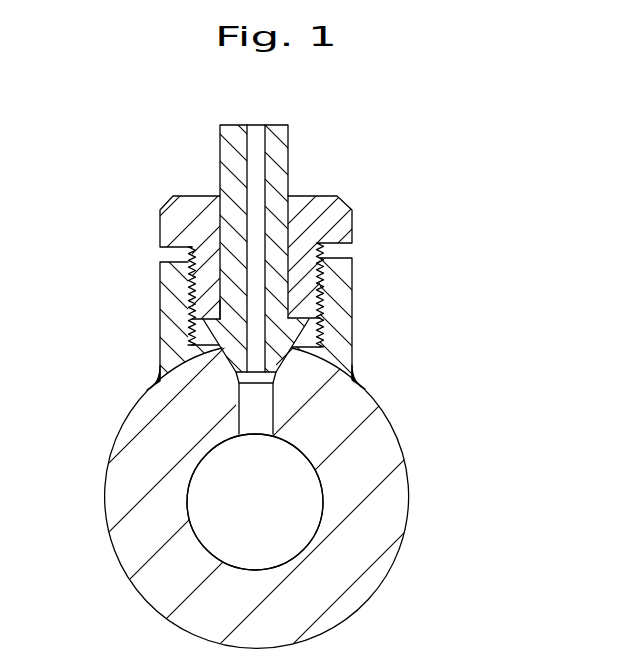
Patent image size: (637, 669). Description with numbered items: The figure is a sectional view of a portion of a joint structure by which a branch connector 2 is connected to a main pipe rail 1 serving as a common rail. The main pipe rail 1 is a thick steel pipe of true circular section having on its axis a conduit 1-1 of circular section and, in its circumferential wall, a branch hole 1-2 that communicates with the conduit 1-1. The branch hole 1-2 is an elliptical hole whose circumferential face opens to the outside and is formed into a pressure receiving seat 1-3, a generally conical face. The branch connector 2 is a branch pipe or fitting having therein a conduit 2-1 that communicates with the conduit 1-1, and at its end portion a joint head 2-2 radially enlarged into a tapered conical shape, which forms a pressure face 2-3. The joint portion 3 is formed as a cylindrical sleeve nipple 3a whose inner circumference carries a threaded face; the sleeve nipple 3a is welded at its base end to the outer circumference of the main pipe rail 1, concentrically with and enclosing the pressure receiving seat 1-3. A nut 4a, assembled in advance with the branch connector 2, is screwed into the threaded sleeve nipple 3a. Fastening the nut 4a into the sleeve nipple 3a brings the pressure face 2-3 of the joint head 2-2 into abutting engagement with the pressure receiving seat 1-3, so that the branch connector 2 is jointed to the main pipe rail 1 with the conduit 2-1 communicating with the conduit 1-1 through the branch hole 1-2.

The main pipe rail 1 is at (388, 460).
The conduit 1-1 is at (322, 506).
The branch hole 1-2 is at (262, 423).
The pressure receiving seat 1-3 is at (276, 380).
The branch connector 2 is at (278, 151).
The conduit 2-1 is at (258, 132).
The joint head 2-2 is at (220, 343).
The pressure face 2-3 is at (302, 346).
The joint portion 3 is at (125, 269).
The sleeve nipple 3a is at (347, 285).
The nut 4a is at (342, 218).